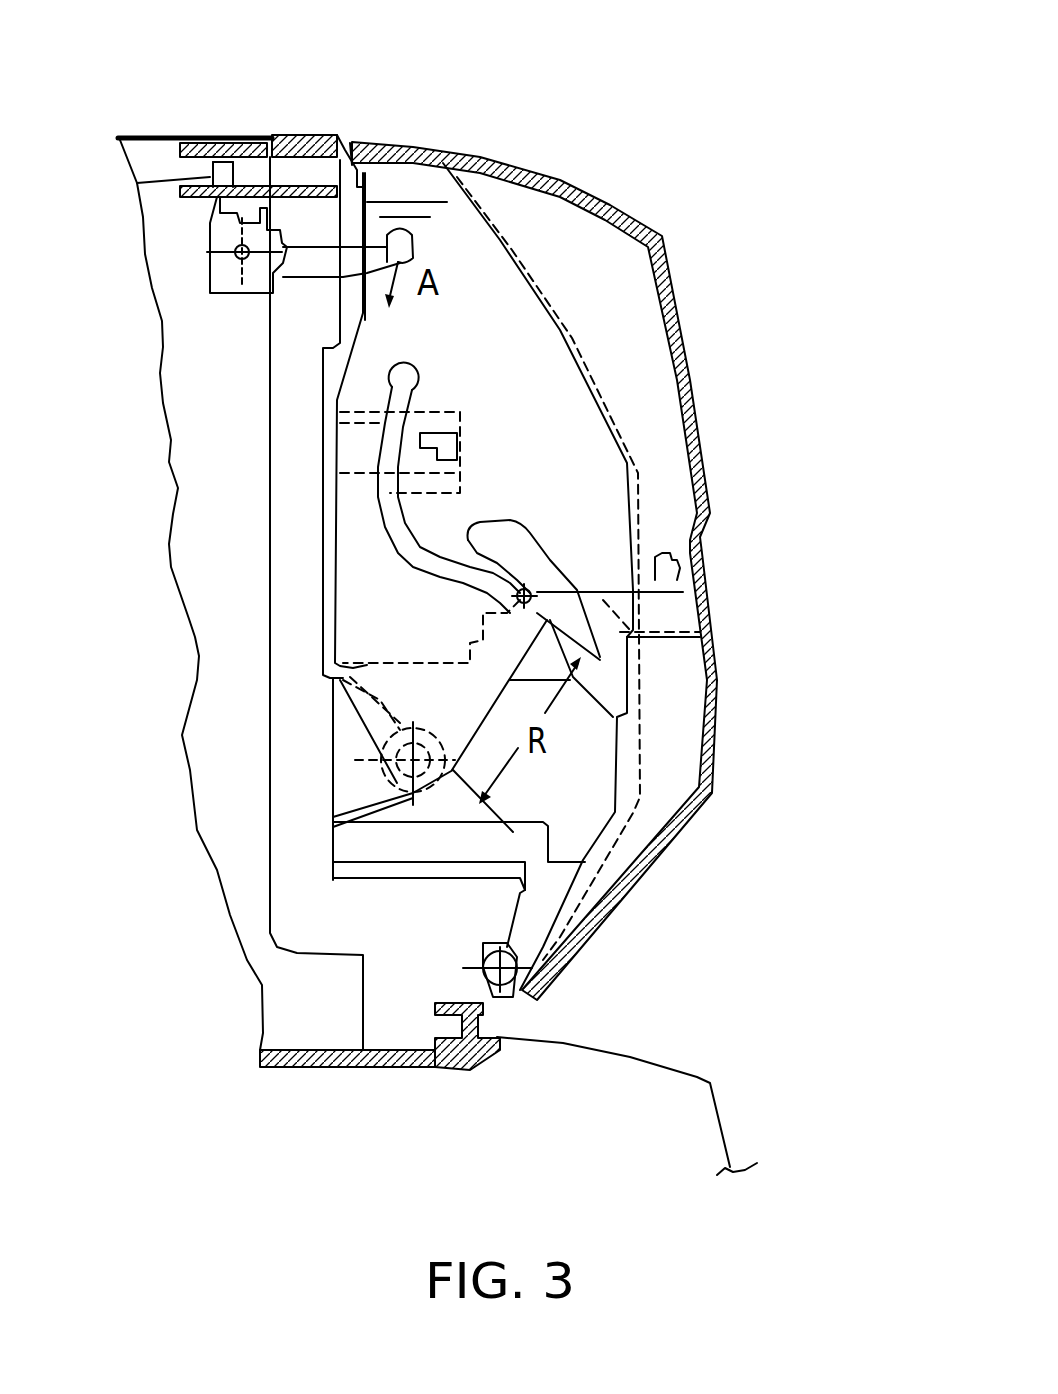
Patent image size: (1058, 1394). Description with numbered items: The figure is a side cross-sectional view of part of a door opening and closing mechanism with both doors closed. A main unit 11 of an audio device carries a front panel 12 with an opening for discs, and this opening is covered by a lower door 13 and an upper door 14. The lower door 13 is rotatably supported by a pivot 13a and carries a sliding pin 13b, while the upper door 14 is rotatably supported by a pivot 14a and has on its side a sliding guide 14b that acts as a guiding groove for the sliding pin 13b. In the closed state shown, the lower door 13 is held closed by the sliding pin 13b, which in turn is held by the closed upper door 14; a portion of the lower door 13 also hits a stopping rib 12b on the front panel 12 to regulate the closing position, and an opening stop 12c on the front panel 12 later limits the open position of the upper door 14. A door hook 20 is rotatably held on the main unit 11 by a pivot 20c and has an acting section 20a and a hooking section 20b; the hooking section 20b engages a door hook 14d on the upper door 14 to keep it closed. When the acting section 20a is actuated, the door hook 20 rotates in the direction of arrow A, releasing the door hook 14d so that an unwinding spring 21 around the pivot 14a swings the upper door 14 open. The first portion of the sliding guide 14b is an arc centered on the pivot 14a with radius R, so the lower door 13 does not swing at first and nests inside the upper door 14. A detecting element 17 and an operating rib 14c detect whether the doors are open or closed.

The main unit 11 is at (135, 137).
The front panel 12 is at (310, 138).
The stopping rib 12b is at (527, 868).
The opening stop 12c is at (547, 823).
The lower door 13 is at (713, 748).
The pivot 13a is at (520, 963).
The sliding pin 13b is at (525, 598).
The upper door 14 is at (663, 237).
The pivot 14a is at (410, 790).
The sliding guide 14b is at (380, 522).
The operating rib 14c is at (457, 450).
The door hook 14d is at (398, 235).
The detecting element 17 is at (440, 444).
The door hook 20 is at (232, 292).
The acting section 20a is at (243, 163).
The hooking section 20b is at (365, 270).
The pivot 20c is at (242, 252).
The unwinding spring 21 is at (378, 712).